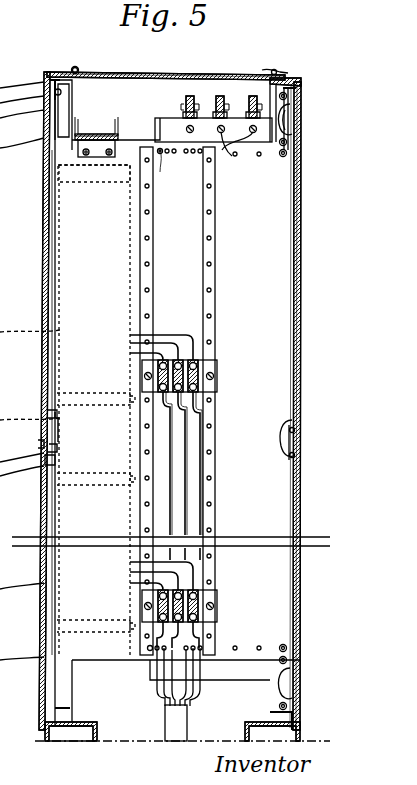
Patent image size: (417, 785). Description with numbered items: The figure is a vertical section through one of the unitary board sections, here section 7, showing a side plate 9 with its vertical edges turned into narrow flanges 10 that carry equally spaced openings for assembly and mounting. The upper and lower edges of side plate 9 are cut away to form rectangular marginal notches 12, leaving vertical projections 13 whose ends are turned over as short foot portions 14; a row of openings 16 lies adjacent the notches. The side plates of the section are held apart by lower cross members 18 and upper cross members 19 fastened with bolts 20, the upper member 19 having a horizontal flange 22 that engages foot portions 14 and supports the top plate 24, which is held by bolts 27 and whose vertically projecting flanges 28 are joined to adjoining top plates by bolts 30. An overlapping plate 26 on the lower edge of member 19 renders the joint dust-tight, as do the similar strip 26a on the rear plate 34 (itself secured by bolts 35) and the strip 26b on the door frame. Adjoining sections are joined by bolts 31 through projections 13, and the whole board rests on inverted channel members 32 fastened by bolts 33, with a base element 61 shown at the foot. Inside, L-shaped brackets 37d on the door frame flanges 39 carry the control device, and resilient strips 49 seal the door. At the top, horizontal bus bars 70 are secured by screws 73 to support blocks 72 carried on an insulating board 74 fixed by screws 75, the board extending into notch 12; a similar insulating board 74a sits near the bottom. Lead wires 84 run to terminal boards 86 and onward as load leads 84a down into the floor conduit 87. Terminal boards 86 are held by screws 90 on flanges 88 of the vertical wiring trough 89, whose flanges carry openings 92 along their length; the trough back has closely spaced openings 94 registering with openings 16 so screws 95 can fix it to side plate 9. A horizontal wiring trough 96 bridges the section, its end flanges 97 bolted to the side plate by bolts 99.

The unitary section 7 is at (97, 64).
The side plate 9 is at (278, 316).
The flange 10 is at (294, 305).
The marginal notch 12 is at (125, 140).
The vertical projection 13 is at (66, 98).
The foot portion 14 is at (272, 78).
The opening 16 is at (238, 158).
The lower cross member 18 is at (295, 716).
The upper cross member 19 is at (298, 122).
The bolt 20 is at (44, 95).
The horizontal flange 22 is at (298, 80).
The top plate 24 is at (135, 75).
The overlapping plate 26 is at (297, 108).
The overlapping strip 26a is at (298, 424).
The overlapping strip 26b is at (46, 440).
The bolt 27 is at (62, 72).
The vertically projecting flange 28 is at (108, 73).
The bolt 30 is at (75, 67).
The bolt 31 is at (50, 82).
The channel member 32 is at (84, 733).
The bolt 33 is at (60, 740).
The flat plate 34 is at (300, 356).
The bolt 35 is at (298, 148).
The bracket 37d is at (98, 626).
The vertical flange 39 is at (50, 232).
The resilient strip 49 is at (48, 264).
The base plate 61 is at (118, 742).
The horizontal bus bar 70 is at (225, 98).
The support block 72 is at (212, 98).
The screw 73 is at (199, 98).
The insulating board 74 is at (166, 120).
The insulating board 74a is at (236, 686).
The screw 75 is at (224, 152).
The lead wire 84 is at (165, 334).
The lead wire 84a is at (204, 446).
The terminal board 86 is at (214, 374).
The conduit 87 is at (172, 730).
The flange 88 is at (204, 240).
The wiring trough 89 is at (216, 242).
The screw 90 is at (214, 378).
The opening 92 is at (208, 256).
The opening 94 is at (168, 153).
The screw 95 is at (160, 160).
The horizontal wiring trough 96 is at (95, 136).
The vertical flange 97 is at (85, 157).
The bolt 99 is at (105, 157).